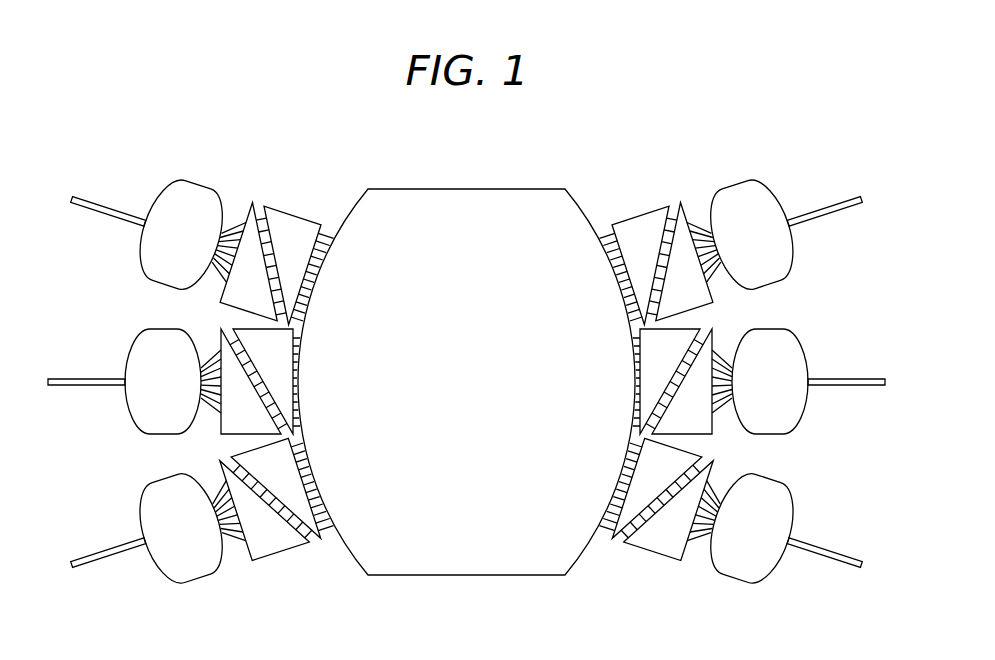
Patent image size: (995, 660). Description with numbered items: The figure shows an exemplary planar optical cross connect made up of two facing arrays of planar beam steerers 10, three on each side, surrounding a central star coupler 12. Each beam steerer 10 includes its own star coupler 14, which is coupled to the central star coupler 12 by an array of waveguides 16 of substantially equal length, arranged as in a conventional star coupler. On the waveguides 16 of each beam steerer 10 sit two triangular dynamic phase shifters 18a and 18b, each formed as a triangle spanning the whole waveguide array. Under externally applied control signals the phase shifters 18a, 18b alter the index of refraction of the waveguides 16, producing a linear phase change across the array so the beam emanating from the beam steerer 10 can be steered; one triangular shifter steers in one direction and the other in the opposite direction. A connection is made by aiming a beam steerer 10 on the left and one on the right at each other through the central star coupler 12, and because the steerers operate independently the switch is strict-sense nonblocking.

The beam steerer 10 is at (730, 236).
The central star coupler 12 is at (465, 189).
The star coupler 14 is at (787, 227).
The waveguides 16 is at (721, 284).
The triangular phase shifter 18a is at (624, 520).
The triangular phase shifter 18b is at (663, 540).